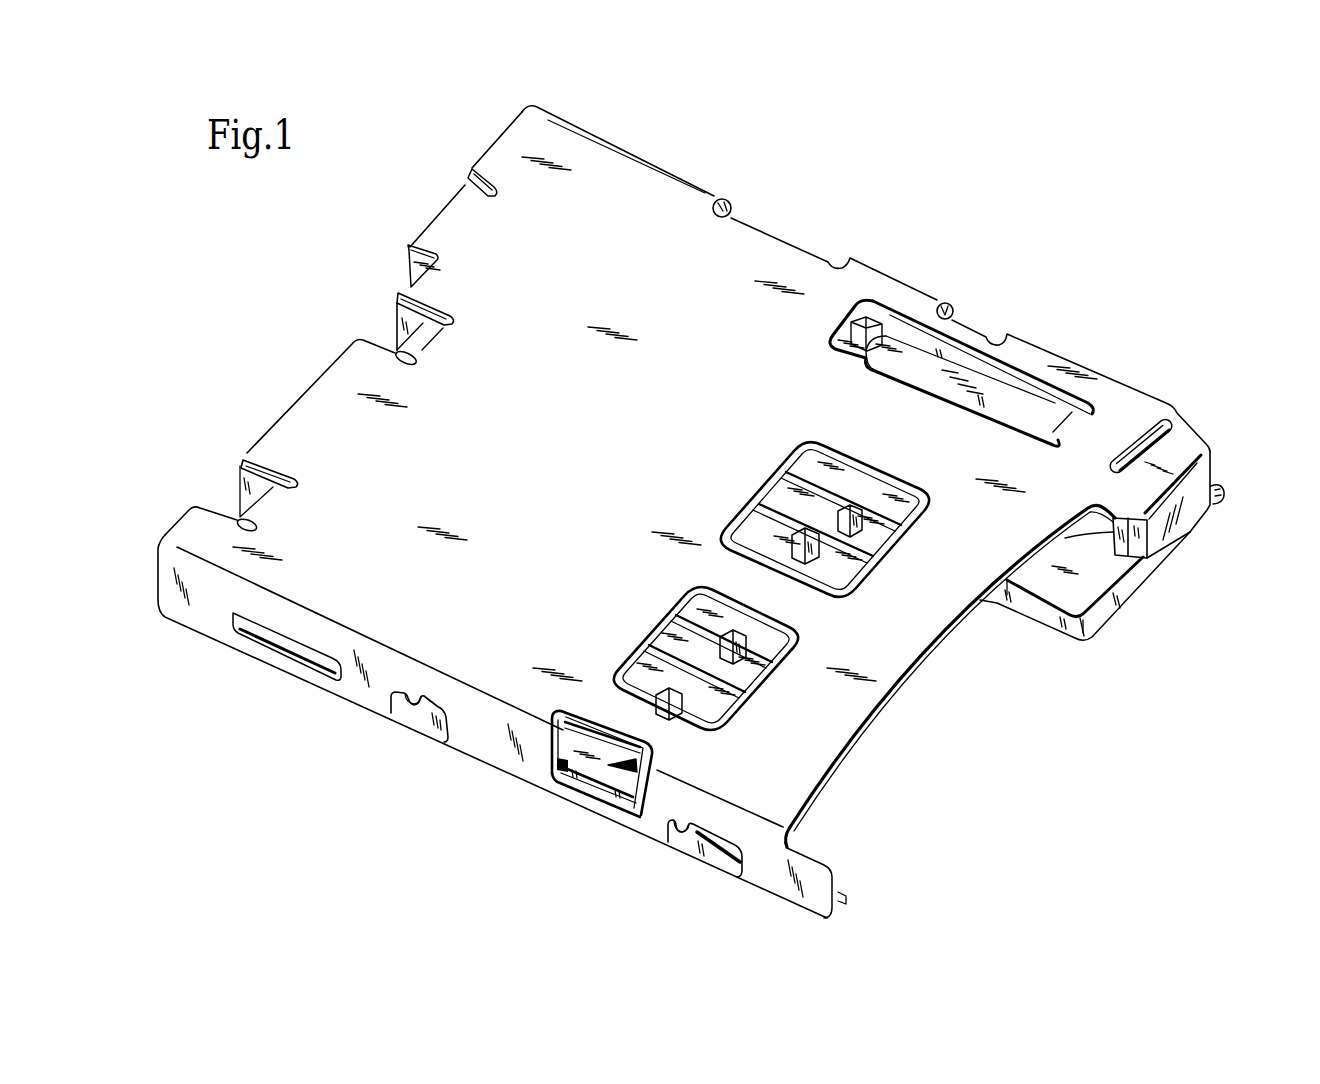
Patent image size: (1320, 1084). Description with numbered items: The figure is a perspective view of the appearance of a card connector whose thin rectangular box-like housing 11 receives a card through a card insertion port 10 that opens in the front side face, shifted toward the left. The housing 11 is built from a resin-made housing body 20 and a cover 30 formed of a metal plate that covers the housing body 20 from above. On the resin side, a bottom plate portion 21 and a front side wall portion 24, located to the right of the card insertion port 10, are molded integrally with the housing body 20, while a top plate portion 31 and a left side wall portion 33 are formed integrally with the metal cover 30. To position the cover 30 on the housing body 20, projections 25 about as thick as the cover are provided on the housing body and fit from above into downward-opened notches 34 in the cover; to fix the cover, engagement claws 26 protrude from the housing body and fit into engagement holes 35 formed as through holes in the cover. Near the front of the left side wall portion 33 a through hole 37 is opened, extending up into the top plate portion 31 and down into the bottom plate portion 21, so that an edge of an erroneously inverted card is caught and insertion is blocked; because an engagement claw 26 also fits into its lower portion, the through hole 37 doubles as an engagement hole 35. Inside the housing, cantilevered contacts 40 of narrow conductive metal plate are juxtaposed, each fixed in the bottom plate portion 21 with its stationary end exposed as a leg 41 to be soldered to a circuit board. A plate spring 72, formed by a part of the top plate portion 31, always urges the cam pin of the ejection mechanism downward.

The card insertion port 10 is at (960, 745).
The housing 11 is at (866, 233).
The housing body 20 is at (1188, 543).
The bottom plate portion 21 is at (1110, 613).
The front side wall portion 24 is at (1140, 543).
The projection 25 is at (422, 724).
The engagement claw 26 is at (312, 660).
The cover 30 is at (1110, 367).
The top plate portion 31 is at (322, 398).
The left side wall portion 33 is at (493, 747).
The notch 34 is at (413, 705).
The engagement hole 35 is at (232, 623).
The through hole 37 is at (547, 755).
The contact 40 is at (780, 503).
The leg 41 is at (873, 557).
The plate spring 72 is at (898, 343).